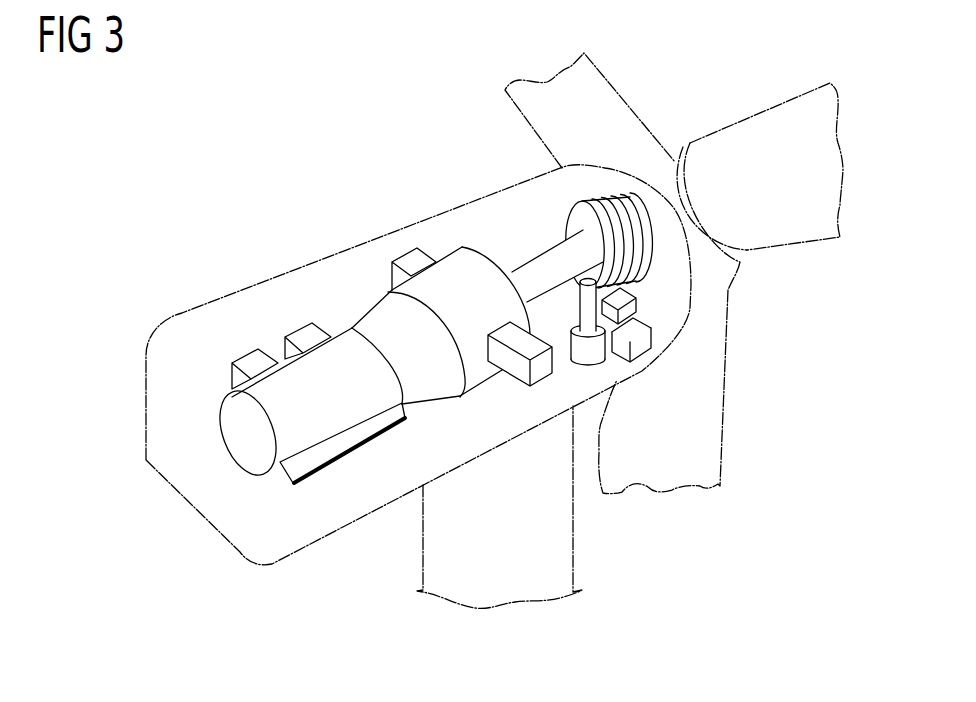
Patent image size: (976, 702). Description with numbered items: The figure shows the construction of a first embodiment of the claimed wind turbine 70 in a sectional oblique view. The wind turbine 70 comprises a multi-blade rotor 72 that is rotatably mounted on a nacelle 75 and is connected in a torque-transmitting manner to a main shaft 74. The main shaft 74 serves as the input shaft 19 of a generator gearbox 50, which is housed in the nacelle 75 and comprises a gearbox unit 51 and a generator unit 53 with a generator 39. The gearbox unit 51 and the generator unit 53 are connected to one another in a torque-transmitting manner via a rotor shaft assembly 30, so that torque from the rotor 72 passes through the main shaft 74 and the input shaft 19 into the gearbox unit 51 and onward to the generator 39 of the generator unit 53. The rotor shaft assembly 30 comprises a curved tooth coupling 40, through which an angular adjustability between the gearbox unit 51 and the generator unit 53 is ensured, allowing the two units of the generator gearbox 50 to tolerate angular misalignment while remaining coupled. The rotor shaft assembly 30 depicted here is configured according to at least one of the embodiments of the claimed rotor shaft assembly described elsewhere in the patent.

The wind turbine 70 is at (449, 330).
The multi-blade rotor 72 is at (706, 438).
The nacelle 75 is at (278, 276).
The input shaft 19 is at (549, 224).
The main shaft 74 is at (547, 267).
The generator gearbox 50 is at (450, 253).
The gearbox unit 51 is at (467, 265).
The rotor shaft assembly 30 is at (401, 311).
The curved tooth coupling 40 is at (395, 310).
The generator 39 is at (230, 403).
The generator unit 53 is at (246, 440).